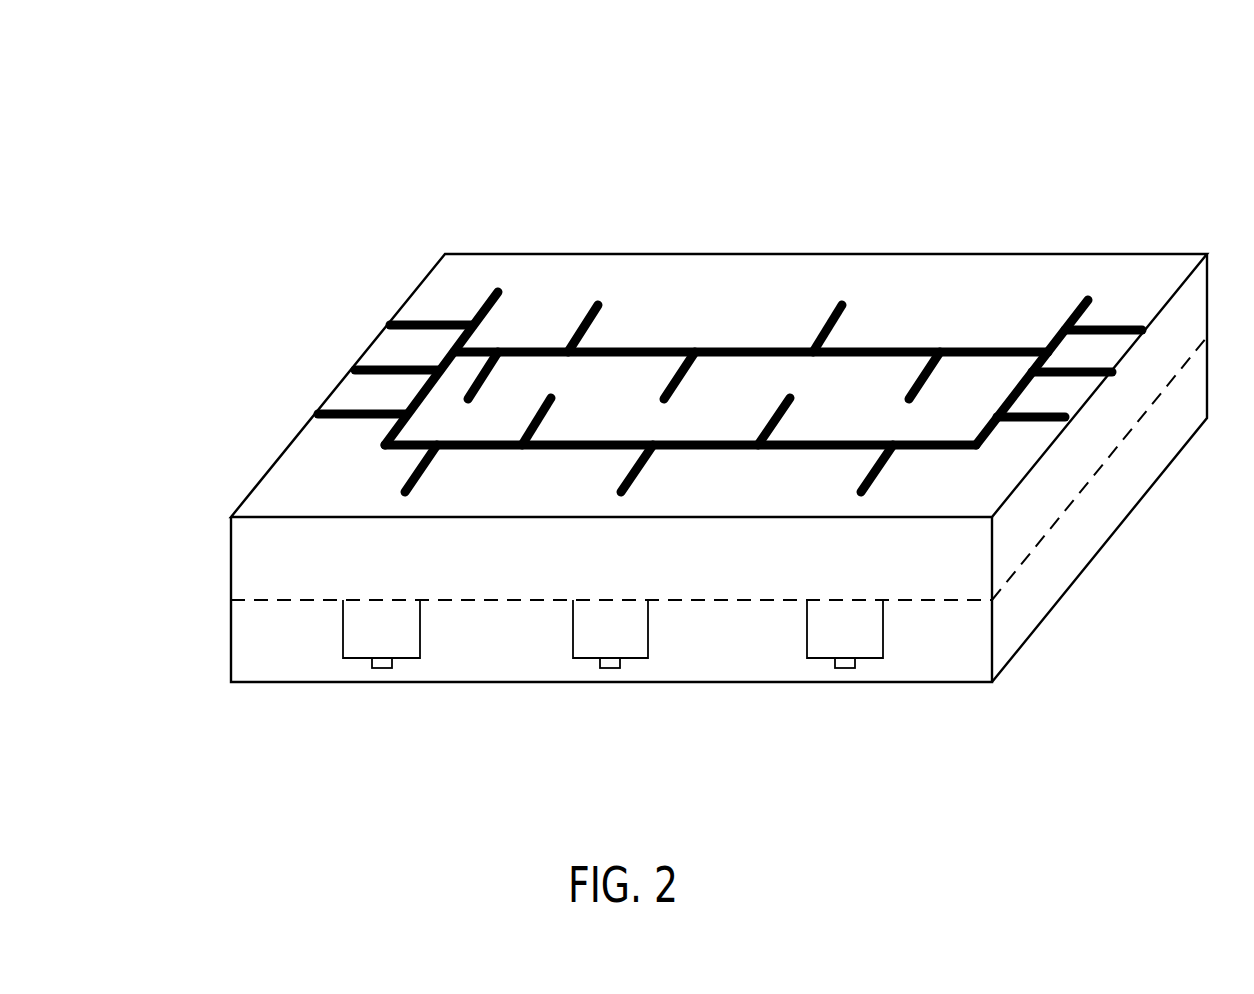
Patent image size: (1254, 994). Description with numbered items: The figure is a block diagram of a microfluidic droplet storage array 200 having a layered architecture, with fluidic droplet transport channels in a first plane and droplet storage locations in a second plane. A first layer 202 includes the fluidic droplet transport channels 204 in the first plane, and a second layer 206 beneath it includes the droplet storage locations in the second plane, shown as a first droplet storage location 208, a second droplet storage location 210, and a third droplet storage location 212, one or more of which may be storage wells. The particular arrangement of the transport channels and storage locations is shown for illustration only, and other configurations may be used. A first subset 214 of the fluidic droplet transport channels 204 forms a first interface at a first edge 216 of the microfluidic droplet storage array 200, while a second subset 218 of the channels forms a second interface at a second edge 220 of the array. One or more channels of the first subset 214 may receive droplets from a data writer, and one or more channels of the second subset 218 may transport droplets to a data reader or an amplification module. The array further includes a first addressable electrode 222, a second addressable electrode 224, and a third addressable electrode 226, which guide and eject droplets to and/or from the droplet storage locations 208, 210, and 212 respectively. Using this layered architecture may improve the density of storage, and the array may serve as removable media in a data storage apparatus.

The microfluidic droplet storage array 200 is at (668, 362).
The first layer 202 is at (230, 556).
The fluidic droplet transport channels 204 is at (695, 388).
The second layer 206 is at (234, 638).
The first droplet storage location 208 is at (399, 677).
The second droplet storage location 210 is at (625, 677).
The third droplet storage location 212 is at (864, 677).
The first subset of the fluidic droplet transport channels 214 is at (373, 362).
The first edge 216 is at (339, 383).
The second subset of the fluidic droplet transport channels 218 is at (1037, 374).
The second edge 220 is at (1027, 472).
The first addressable electrode 222 is at (403, 643).
The second addressable electrode 224 is at (632, 641).
The third addressable electrode 226 is at (866, 641).